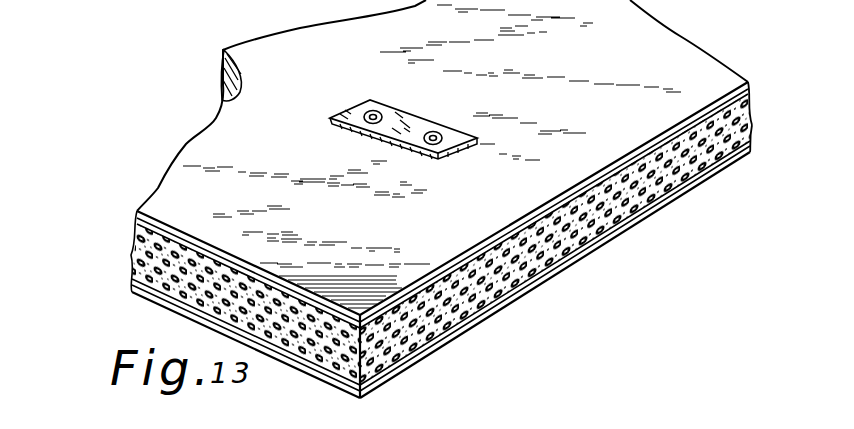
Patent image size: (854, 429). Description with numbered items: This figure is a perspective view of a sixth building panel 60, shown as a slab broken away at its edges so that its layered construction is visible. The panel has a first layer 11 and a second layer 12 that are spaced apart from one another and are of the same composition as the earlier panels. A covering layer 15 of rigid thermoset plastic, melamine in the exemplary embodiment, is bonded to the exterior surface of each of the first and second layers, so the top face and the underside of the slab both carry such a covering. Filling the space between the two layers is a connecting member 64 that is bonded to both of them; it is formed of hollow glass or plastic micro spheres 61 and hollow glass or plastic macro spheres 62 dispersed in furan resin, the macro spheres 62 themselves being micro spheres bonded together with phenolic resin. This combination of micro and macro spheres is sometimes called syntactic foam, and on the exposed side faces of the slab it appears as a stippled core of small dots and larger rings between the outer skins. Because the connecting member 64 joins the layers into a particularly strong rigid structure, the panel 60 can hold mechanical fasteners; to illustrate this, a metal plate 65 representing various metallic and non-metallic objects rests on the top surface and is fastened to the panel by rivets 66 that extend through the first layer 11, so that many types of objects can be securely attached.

The building panel 60 is at (430, 214).
The micro spheres 61 is at (502, 296).
The macro spheres 62 is at (133, 291).
The connecting member 64 is at (340, 375).
The metal plate 65 is at (403, 128).
The rivets 66 is at (386, 143).
The first layer 11 is at (750, 90).
The second layer 12 is at (752, 138).
The covering layer 15 is at (716, 69).